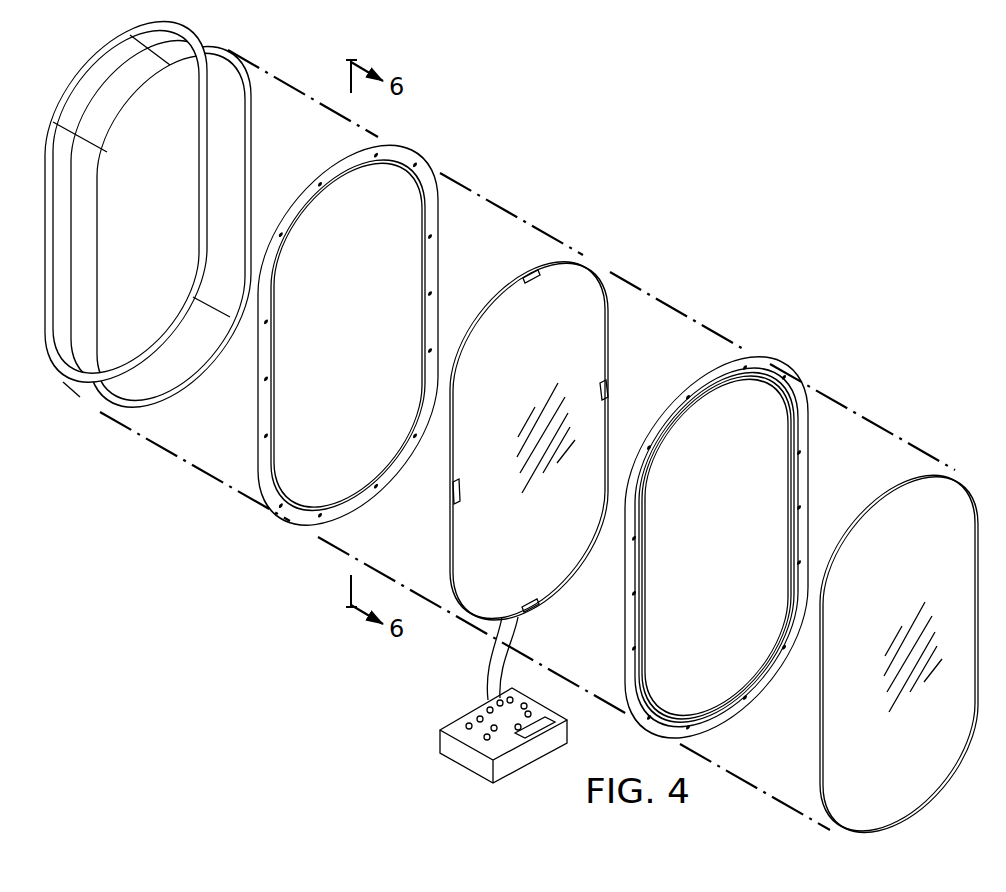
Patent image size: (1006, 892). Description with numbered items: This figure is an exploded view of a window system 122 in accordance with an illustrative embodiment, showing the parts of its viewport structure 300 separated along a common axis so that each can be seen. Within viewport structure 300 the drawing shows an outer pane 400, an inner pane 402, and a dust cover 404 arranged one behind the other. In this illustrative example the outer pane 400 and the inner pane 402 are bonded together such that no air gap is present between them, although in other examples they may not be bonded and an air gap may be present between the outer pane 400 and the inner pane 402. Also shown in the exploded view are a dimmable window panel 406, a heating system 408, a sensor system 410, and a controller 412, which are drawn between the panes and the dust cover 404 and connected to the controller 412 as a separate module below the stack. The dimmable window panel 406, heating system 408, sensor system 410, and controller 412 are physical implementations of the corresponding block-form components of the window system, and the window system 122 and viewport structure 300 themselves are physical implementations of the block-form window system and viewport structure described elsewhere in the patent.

The window system 122 is at (155, 522).
The viewport structure 300 is at (735, 170).
The outer pane 400 is at (98, 67).
The inner pane 402 is at (248, 133).
The dust cover 404 is at (915, 798).
The dimmable window panel 406 is at (559, 459).
The heating system 408 is at (599, 266).
The sensor system 410 is at (615, 380).
The controller 412 is at (450, 730).